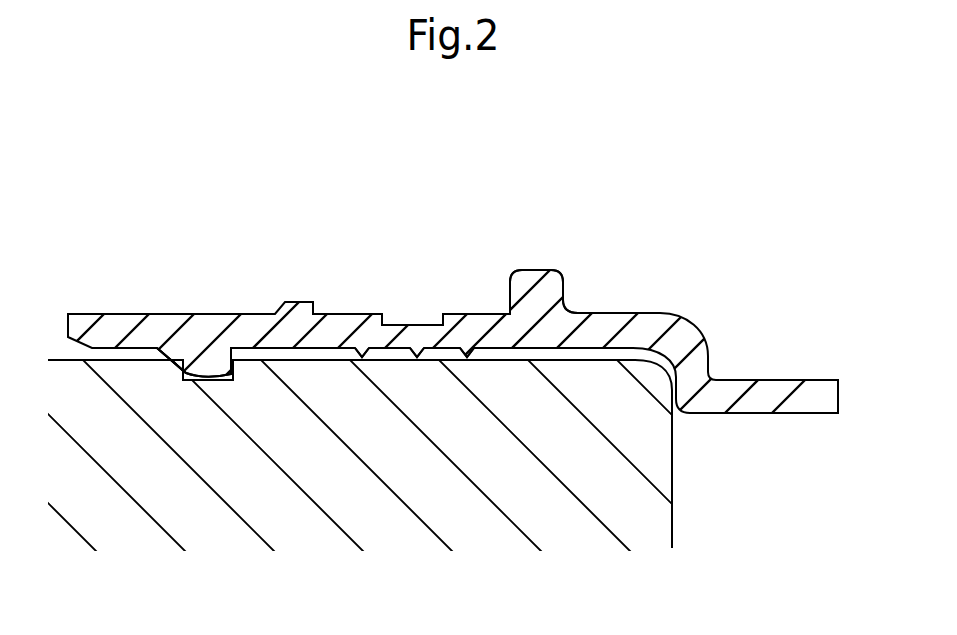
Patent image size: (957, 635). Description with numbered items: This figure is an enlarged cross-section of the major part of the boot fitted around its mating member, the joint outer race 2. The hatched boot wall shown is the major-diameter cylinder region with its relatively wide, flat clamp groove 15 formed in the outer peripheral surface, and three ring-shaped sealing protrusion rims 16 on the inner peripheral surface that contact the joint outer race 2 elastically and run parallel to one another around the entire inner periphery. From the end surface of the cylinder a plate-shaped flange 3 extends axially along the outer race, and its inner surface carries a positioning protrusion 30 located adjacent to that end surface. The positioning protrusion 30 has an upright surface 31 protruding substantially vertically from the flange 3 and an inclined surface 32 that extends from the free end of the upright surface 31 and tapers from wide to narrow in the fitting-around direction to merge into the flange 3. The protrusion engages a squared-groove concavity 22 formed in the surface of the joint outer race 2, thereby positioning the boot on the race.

The joint outer race 2 is at (637, 502).
The flange 3 is at (118, 325).
The clamp groove 15 is at (467, 312).
The sealing protrusion rims 16 is at (360, 348).
The concavity 22 is at (214, 376).
The positioning protrusion 30 is at (213, 363).
The upright surface 31 is at (250, 352).
The inclined surface 32 is at (195, 360).